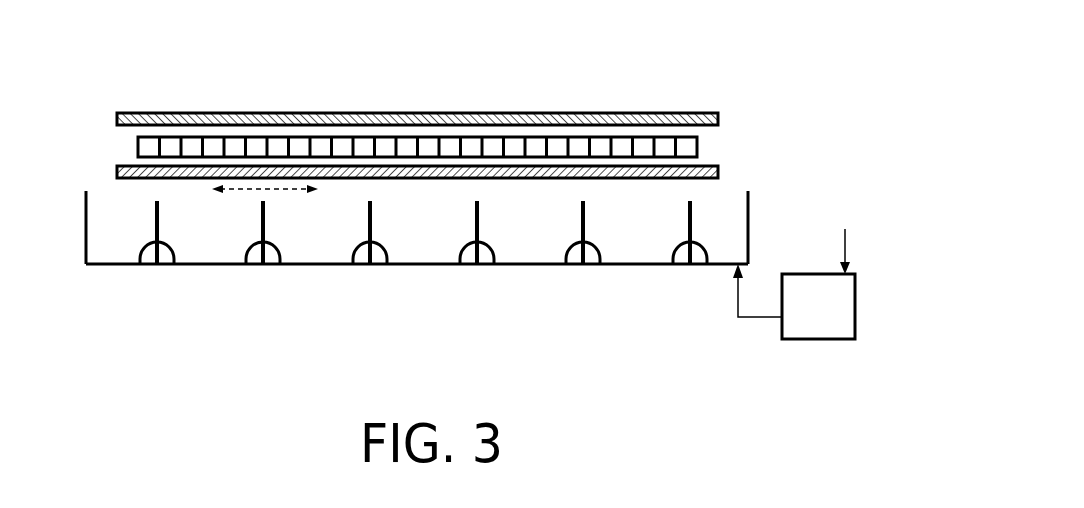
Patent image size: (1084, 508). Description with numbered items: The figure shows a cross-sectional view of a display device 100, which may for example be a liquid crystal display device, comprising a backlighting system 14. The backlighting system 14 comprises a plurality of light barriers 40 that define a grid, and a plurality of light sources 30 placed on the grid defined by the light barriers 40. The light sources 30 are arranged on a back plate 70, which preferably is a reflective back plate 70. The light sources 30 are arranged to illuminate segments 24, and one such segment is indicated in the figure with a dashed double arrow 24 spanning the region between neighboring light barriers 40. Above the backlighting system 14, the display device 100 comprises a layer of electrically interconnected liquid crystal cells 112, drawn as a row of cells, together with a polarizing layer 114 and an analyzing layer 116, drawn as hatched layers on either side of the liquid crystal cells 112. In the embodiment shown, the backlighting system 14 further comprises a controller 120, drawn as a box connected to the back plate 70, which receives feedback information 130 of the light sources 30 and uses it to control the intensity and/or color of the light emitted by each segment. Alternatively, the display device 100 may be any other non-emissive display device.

The display device 100 is at (688, 65).
The liquid crystal cells 112 is at (138, 147).
The polarizing layer 114 is at (720, 120).
The analyzing layer 116 is at (720, 172).
The backlighting system 14 is at (73, 182).
The segments 24 is at (240, 190).
The light sources 30 is at (383, 252).
The light barriers 40 is at (480, 217).
The back plate 70 is at (634, 260).
The controller 120 is at (818, 340).
The feedback information 130 is at (866, 224).